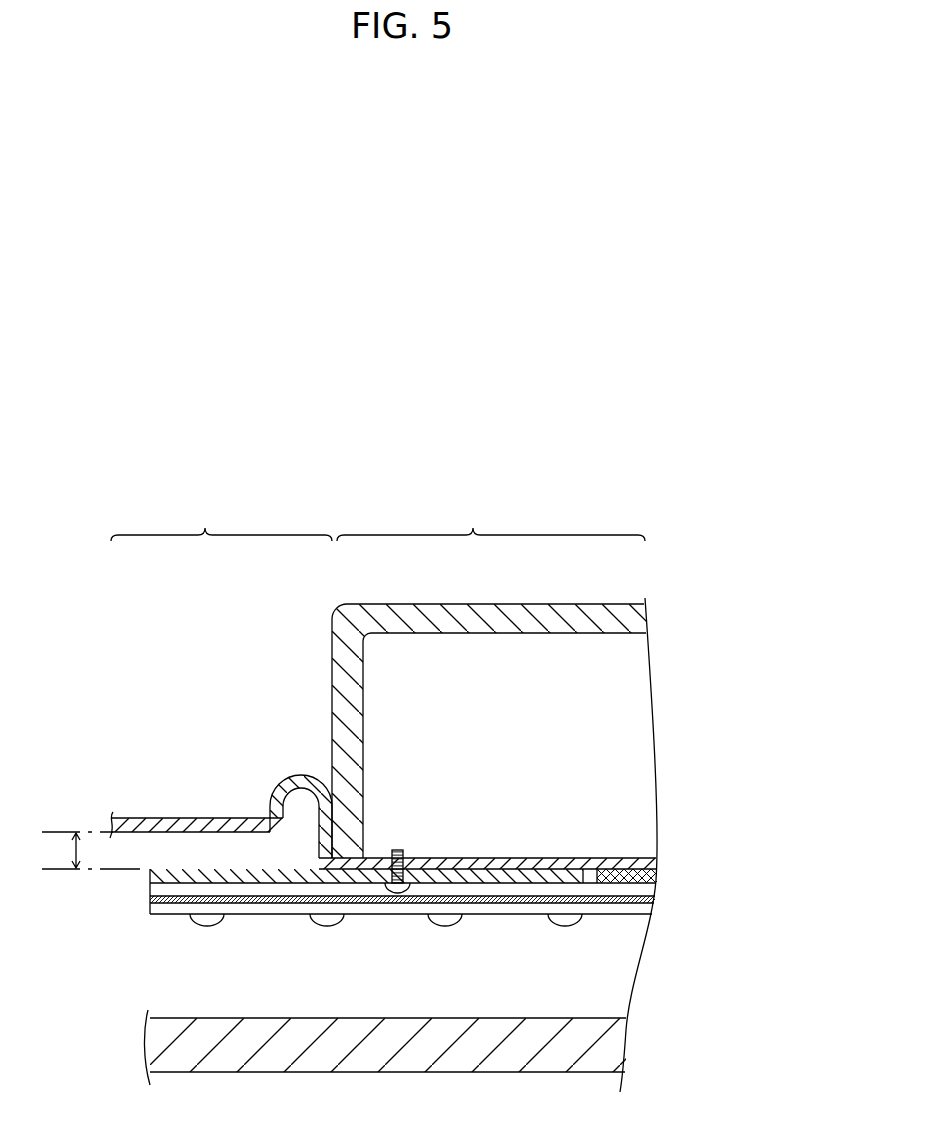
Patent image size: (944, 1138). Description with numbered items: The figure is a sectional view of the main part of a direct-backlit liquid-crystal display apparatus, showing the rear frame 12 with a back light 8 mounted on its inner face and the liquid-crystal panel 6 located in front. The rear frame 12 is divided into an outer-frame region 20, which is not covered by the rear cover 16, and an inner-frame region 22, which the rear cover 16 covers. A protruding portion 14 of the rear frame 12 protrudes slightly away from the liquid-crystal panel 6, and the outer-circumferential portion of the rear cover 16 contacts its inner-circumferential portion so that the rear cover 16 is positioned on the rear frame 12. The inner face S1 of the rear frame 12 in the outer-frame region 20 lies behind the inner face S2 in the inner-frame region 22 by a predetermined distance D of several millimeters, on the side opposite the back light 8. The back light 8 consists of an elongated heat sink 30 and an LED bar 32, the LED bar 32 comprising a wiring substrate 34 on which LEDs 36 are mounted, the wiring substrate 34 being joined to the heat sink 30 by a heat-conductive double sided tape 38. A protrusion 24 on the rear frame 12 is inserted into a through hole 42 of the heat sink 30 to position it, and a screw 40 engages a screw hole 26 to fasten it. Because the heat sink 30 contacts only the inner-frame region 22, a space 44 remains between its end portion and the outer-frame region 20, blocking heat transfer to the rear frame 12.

The liquid-crystal panel 6 is at (168, 1045).
The back light 8 is at (477, 869).
The rear frame 12 is at (146, 818).
The protruding portion 14 is at (298, 776).
The rear cover 16 is at (472, 604).
The outer-frame region 20 is at (221, 517).
The inner-frame region 22 is at (491, 518).
The protrusion 24 is at (564, 872).
The screw hole 26 is at (428, 868).
The heat sink 30 is at (655, 877).
The LED bar 32 is at (459, 926).
The wiring substrate 34 is at (640, 908).
The LED 36 is at (568, 921).
The double sided tape 38 is at (640, 889).
The screw 40 is at (400, 895).
The through hole 42 is at (612, 858).
The space 44 is at (211, 848).
The inner face of the rear frame in the outer-frame region S1 is at (60, 832).
The inner face of the rear frame in the inner-frame region S2 is at (73, 867).
The predetermined distance D is at (65, 850).